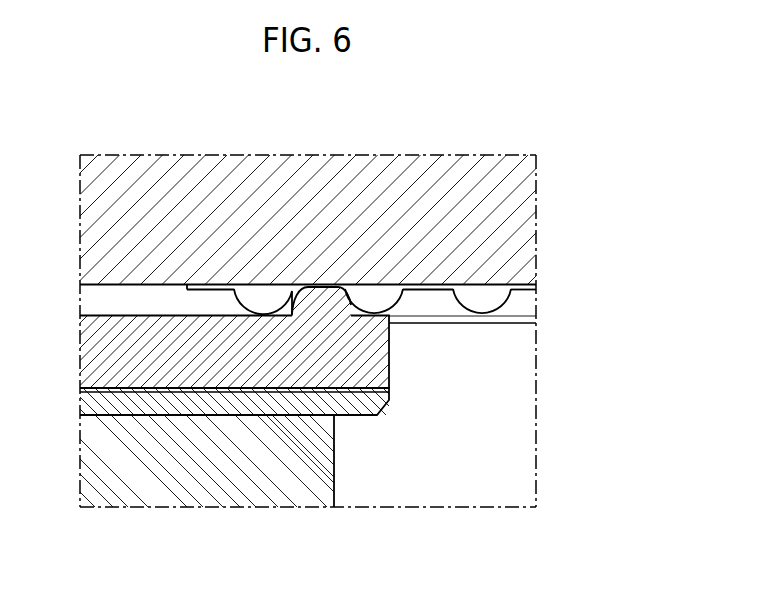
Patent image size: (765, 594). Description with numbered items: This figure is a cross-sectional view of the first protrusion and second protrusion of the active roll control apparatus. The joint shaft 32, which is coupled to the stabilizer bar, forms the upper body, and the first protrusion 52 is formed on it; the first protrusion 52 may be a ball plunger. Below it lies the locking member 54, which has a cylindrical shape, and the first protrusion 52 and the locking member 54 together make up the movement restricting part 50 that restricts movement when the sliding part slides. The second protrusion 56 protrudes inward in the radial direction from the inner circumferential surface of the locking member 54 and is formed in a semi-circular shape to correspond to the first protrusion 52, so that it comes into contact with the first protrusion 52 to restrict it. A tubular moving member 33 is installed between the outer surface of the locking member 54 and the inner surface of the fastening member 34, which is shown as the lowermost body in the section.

The joint shaft 32 is at (537, 226).
The moving member 33 is at (389, 403).
The fastening member 34 is at (205, 507).
The movement restricting part 50 is at (618, 303).
The first protrusion 52 is at (514, 293).
The locking member 54 is at (389, 353).
The second protrusion 56 is at (322, 300).